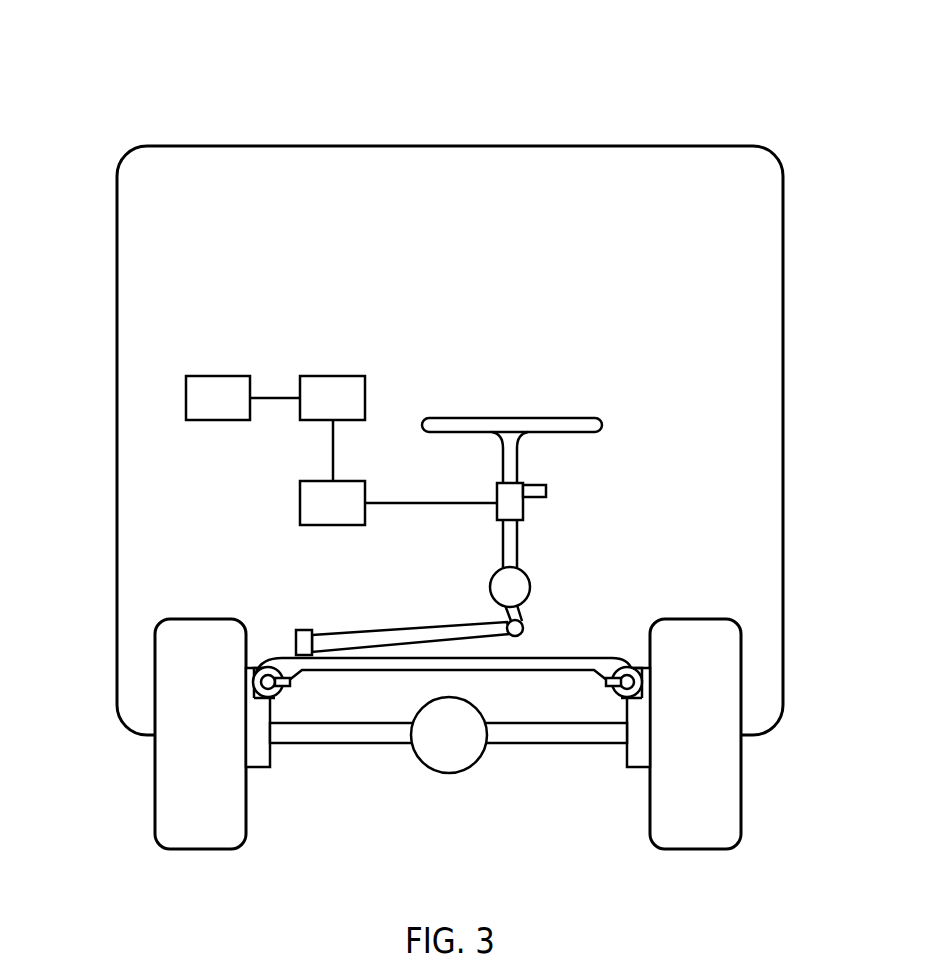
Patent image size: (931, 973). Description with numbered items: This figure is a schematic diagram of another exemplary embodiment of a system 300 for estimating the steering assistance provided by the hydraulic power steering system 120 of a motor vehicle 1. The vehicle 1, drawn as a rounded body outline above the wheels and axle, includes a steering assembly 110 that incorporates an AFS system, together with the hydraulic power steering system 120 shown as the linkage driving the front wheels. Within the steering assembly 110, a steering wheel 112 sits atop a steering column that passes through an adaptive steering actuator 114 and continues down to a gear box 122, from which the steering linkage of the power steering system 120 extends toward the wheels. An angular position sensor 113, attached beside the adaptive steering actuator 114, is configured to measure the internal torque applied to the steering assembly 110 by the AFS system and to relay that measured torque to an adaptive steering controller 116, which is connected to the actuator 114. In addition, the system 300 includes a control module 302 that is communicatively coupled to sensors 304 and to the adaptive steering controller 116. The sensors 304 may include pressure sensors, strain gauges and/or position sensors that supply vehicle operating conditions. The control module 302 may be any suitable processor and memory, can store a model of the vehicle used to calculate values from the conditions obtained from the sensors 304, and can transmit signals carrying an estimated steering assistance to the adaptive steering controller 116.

The system for estimating steering assistance 300 is at (152, 76).
The motor vehicle 1 is at (783, 233).
The steering assembly 110 is at (560, 491).
The steering wheel 112 is at (468, 418).
The angular position sensor 113 is at (546, 490).
The adaptive steering actuator 114 is at (523, 511).
The adaptive steering controller 116 is at (351, 516).
The hydraulic power steering system 120 is at (375, 600).
The gear box 122 is at (531, 587).
The control module 302 is at (351, 411).
The sensors 304 is at (236, 411).